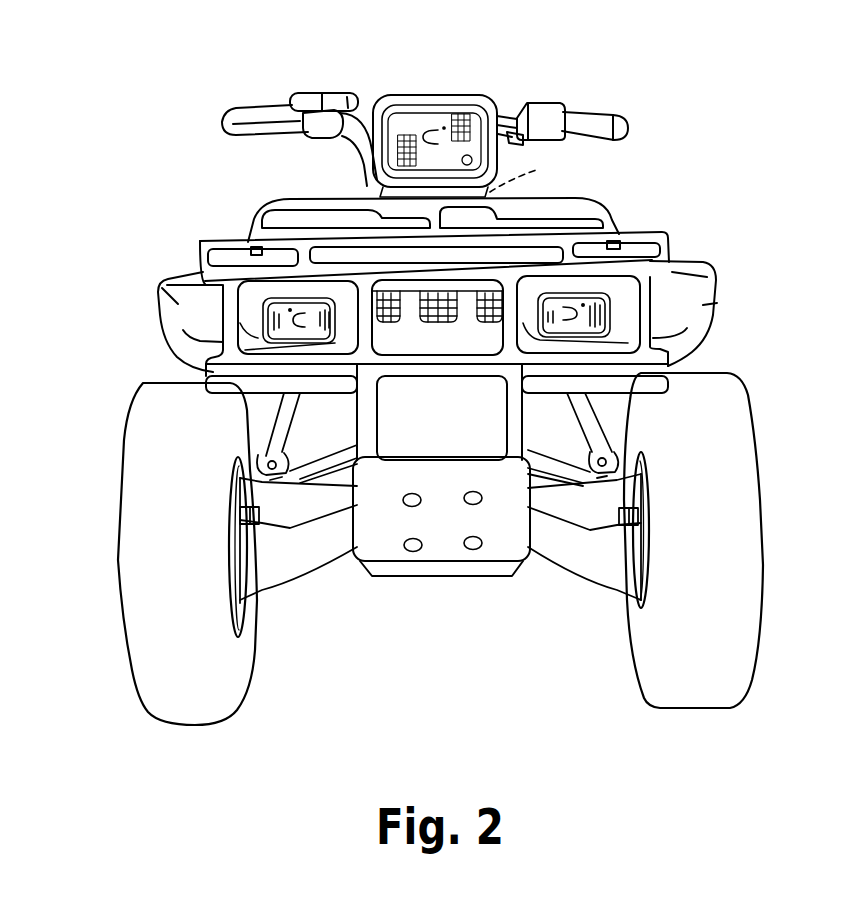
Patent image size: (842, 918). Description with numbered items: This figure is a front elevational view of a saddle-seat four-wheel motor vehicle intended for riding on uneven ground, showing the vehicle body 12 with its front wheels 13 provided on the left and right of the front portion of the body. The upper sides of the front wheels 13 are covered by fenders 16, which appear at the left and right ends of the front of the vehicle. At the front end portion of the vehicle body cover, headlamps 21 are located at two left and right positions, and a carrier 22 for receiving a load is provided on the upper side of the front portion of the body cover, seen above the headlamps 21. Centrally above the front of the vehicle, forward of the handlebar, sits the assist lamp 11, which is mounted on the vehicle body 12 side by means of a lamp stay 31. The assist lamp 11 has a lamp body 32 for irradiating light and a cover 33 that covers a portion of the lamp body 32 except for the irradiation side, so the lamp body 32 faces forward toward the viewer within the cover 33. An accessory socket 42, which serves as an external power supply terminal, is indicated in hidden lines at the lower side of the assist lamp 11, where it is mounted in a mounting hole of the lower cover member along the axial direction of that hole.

The assist lamp 11 is at (450, 108).
The vehicle body 12 is at (347, 558).
The front wheels 13 is at (147, 532).
The fenders 16 is at (178, 302).
The headlamps 21 is at (265, 330).
The carrier 22 is at (648, 234).
The lamp stay 31 is at (456, 95).
The lamp body 32 is at (428, 120).
The cover 33 is at (385, 98).
The accessory socket 42 is at (530, 172).